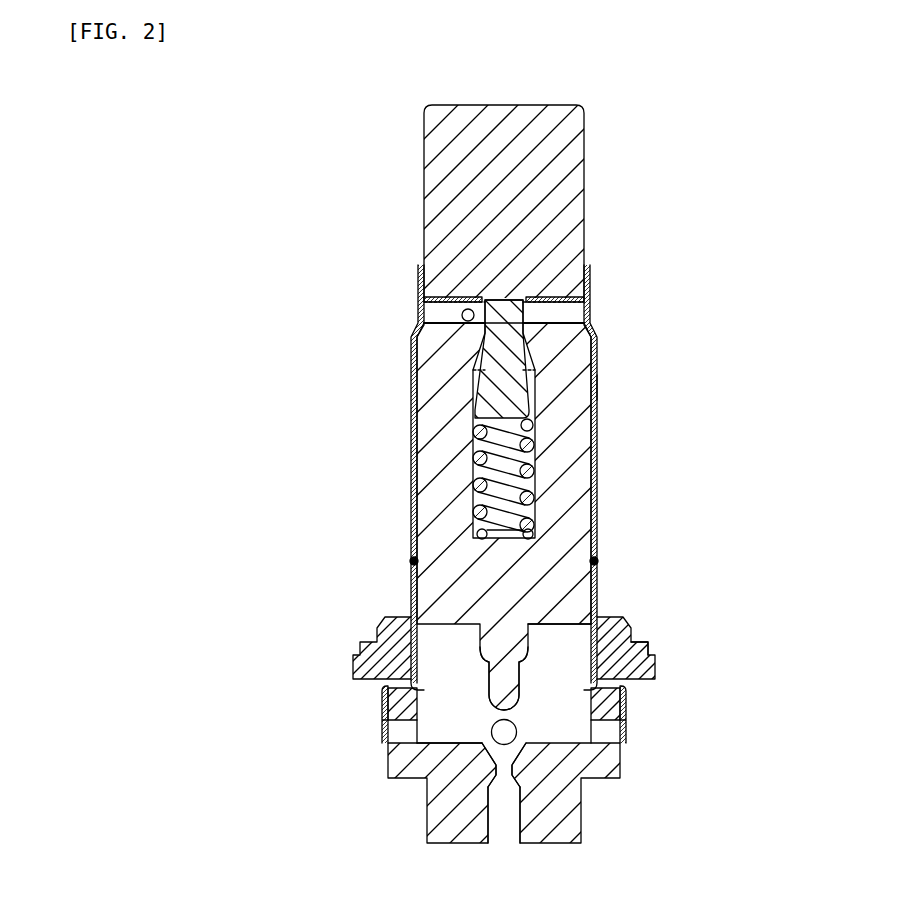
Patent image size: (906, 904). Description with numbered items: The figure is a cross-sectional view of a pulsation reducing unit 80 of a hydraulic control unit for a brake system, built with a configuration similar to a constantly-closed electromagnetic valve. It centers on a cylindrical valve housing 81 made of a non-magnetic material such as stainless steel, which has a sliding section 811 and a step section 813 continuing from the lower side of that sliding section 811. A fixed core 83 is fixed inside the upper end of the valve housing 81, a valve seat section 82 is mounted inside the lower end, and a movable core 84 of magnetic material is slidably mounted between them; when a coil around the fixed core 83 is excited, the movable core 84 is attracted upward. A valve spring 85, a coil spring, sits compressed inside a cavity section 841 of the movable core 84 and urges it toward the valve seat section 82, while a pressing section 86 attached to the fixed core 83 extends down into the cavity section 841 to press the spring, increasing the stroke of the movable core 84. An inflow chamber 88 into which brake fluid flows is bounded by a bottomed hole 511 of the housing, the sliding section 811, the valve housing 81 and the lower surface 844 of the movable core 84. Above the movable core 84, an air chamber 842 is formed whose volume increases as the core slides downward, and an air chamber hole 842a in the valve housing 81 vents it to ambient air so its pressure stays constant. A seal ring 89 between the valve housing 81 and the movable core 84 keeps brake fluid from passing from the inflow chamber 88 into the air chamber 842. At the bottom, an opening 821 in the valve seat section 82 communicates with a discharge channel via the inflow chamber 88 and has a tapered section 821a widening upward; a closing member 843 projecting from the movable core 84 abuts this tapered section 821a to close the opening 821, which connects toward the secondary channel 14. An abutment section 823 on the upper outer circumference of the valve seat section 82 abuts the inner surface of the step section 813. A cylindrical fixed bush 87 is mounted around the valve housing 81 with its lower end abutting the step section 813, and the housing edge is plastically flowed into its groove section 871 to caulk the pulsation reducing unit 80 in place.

The pulsation reducing unit 80 is at (652, 122).
The fixed core 83 is at (570, 196).
The valve housing 81 is at (597, 355).
The sliding section 811 is at (594, 387).
The seal ring 89 is at (414, 561).
The air chamber hole 842a is at (465, 298).
The air chamber 842 is at (443, 315).
The cavity section 841 is at (482, 382).
The pressing section 86 is at (505, 318).
The movable core 84 is at (568, 450).
The closing member 843 is at (503, 655).
The lower surface of the movable core 844 is at (548, 624).
The valve spring 85 is at (482, 497).
The inflow chamber 88 is at (428, 658).
The fixed bush 87 is at (613, 618).
The groove section 871 is at (638, 637).
The abutment section 823 is at (382, 698).
The step section 813 is at (625, 688).
The valve seat section 82 is at (417, 762).
The bottomed hole 511 is at (465, 732).
The tapered section 821a is at (513, 745).
The opening 821 is at (515, 768).
The secondary channel 14 is at (510, 813).